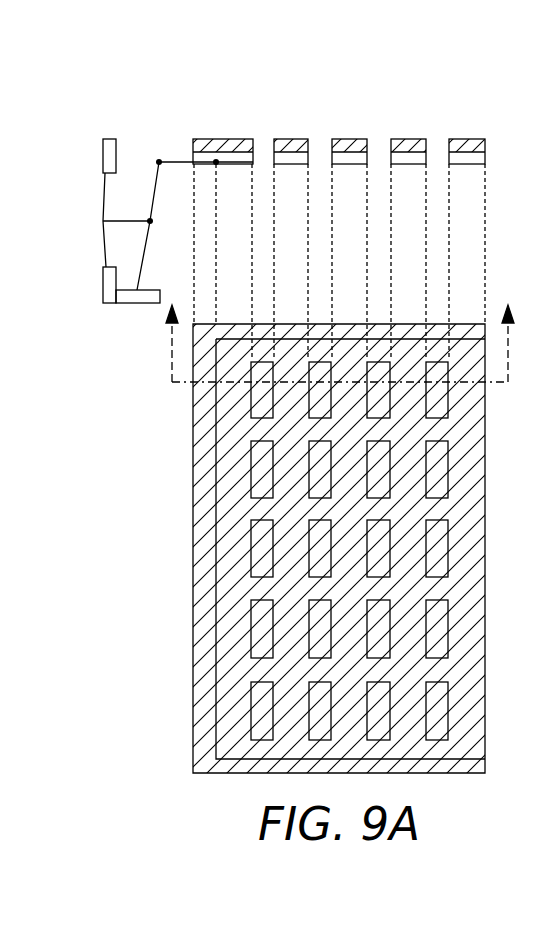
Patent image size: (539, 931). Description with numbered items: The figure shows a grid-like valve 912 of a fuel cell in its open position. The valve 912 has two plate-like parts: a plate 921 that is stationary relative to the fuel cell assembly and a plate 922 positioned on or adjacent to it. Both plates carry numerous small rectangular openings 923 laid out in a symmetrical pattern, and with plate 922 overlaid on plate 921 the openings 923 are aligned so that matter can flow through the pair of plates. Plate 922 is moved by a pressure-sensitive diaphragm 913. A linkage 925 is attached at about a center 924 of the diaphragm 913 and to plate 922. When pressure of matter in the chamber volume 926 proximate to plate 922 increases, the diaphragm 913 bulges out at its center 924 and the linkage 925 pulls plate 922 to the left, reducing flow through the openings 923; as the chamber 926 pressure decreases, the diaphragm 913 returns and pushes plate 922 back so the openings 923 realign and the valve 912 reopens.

The valve 912 is at (470, 110).
The diaphragm 913 is at (104, 238).
The plate 921 is at (248, 152).
The plate 922 is at (304, 158).
The openings 923 is at (440, 470).
The center of diaphragm 924 is at (104, 218).
The linkage 925 is at (156, 163).
The chamber volume 926 is at (372, 253).